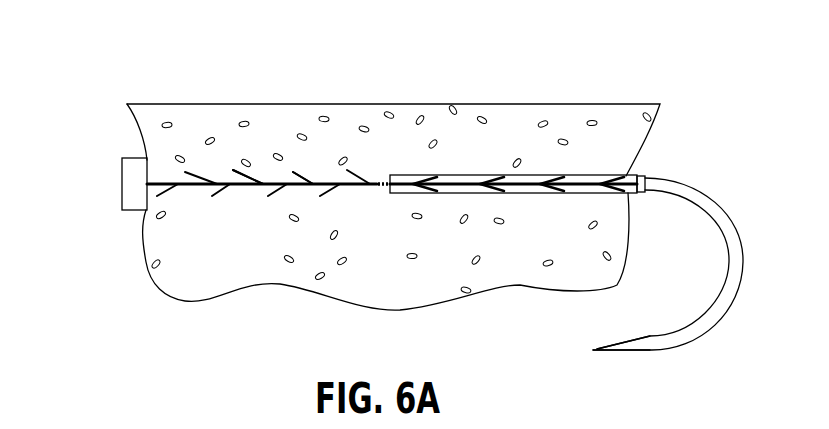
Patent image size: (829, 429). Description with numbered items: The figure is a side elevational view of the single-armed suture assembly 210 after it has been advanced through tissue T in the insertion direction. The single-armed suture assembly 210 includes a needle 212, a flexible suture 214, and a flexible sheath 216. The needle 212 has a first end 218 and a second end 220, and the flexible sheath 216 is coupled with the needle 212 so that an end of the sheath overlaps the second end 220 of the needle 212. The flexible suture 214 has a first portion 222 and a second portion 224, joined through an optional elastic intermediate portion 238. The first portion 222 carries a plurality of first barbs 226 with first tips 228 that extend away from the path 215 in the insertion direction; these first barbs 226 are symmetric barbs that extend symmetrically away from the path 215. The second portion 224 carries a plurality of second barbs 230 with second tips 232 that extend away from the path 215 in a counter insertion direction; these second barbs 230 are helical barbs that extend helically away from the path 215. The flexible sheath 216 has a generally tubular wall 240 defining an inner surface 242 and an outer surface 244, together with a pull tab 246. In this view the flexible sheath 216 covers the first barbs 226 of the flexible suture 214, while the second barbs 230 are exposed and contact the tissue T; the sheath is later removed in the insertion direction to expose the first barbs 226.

The single-armed suture assembly 210 is at (108, 42).
The tissue T is at (393, 167).
The needle 212 is at (730, 218).
The flexible suture 214 is at (377, 127).
The path 215 is at (563, 177).
The flexible sheath 216 is at (503, 163).
The first end 218 is at (595, 349).
The second end 220 is at (633, 172).
The first portion 222 is at (452, 148).
The second portion 224 is at (255, 147).
The first barbs 226 is at (593, 195).
The first tips 228 is at (433, 193).
The second barbs 230 is at (287, 195).
The second tips 232 is at (298, 172).
The elastic intermediate portion 238 is at (383, 192).
The tubular wall 240 is at (532, 172).
The inner surface 242 is at (448, 193).
The outer surface 244 is at (594, 194).
The pull tab 246 is at (137, 198).